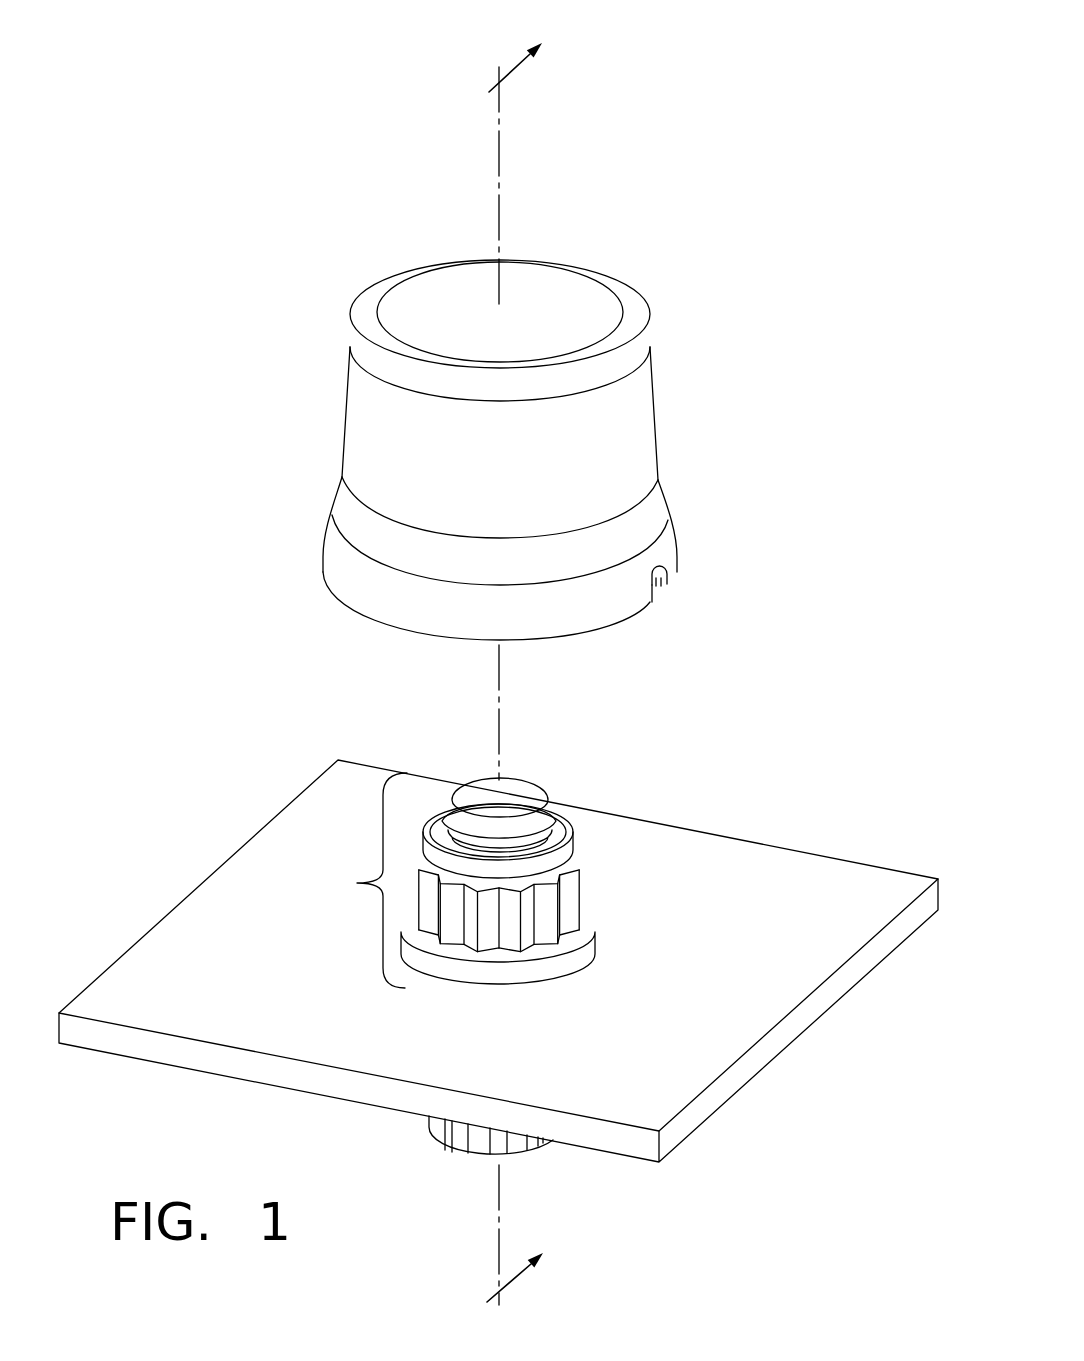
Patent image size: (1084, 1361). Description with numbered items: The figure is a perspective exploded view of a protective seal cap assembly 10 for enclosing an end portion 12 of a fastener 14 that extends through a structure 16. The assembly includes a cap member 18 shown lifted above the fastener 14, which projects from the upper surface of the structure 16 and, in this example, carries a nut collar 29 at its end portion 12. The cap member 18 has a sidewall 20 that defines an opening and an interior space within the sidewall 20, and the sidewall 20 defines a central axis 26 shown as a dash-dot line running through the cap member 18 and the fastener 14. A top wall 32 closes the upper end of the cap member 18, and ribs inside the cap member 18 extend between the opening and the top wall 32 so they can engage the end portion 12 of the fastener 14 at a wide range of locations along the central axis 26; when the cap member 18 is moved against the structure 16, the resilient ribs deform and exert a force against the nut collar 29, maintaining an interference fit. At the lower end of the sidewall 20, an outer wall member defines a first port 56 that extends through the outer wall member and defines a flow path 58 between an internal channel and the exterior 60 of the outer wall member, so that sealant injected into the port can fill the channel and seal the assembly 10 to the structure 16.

The protective seal cap assembly 10 is at (670, 182).
The end portion 12 is at (357, 883).
The fastener 14 is at (482, 943).
The structure 16 is at (703, 868).
The cap member 18 is at (528, 466).
The sidewall 20 is at (390, 428).
The central axis 26 is at (499, 155).
The nut collar 29 is at (542, 953).
The top wall 32 is at (582, 305).
The first port 56 is at (684, 580).
The flow path 58 is at (675, 603).
The exterior 60 is at (706, 546).